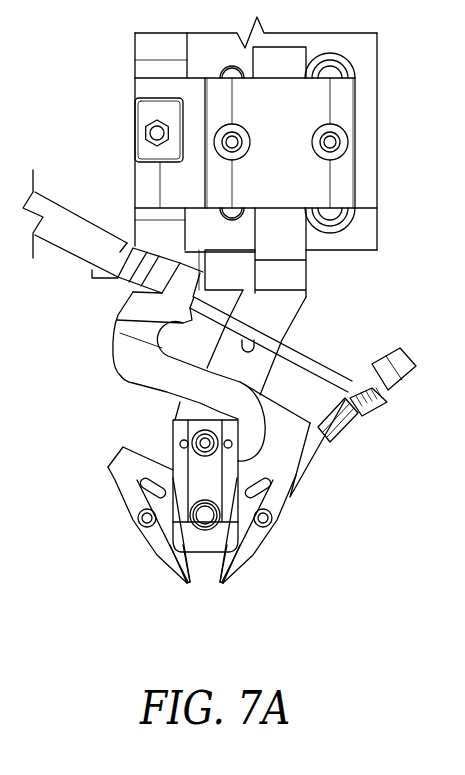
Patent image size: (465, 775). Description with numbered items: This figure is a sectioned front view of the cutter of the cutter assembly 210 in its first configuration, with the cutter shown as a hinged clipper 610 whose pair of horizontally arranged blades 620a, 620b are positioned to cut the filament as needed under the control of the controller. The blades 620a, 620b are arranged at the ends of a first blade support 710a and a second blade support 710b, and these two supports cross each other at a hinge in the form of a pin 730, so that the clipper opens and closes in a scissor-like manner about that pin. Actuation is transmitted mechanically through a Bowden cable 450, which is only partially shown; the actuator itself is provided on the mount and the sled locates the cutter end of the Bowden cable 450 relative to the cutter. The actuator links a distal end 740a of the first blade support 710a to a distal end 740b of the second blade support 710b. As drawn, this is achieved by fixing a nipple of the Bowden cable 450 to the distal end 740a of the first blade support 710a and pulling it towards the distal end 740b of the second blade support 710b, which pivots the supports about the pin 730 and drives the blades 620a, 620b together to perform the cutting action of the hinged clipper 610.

The cutter assembly 210 is at (375, 548).
The Bowden cable 450 is at (85, 247).
The hinged clipper 610 is at (153, 533).
The first blade 620a is at (182, 579).
The second blade 620b is at (233, 578).
The first blade support 710a is at (143, 557).
The second blade support 710b is at (254, 553).
The pin 730 is at (205, 515).
The distal end of the first blade support 740a is at (375, 363).
The distal end of the second blade support 740b is at (123, 355).